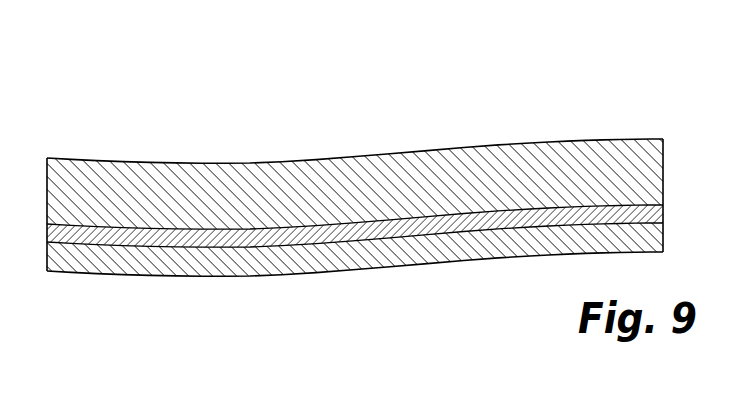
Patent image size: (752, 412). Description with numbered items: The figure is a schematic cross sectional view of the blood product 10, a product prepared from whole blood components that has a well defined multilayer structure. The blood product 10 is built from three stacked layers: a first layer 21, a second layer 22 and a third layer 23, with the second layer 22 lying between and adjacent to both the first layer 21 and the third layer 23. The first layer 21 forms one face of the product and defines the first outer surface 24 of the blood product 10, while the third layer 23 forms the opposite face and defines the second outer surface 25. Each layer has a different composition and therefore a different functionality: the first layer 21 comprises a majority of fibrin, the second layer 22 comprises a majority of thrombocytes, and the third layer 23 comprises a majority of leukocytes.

The blood product 10 is at (157, 141).
The first layer 21 is at (337, 202).
The second layer 22 is at (52, 231).
The third layer 23 is at (348, 255).
The first outer surface 24 is at (440, 147).
The second outer surface 25 is at (270, 276).